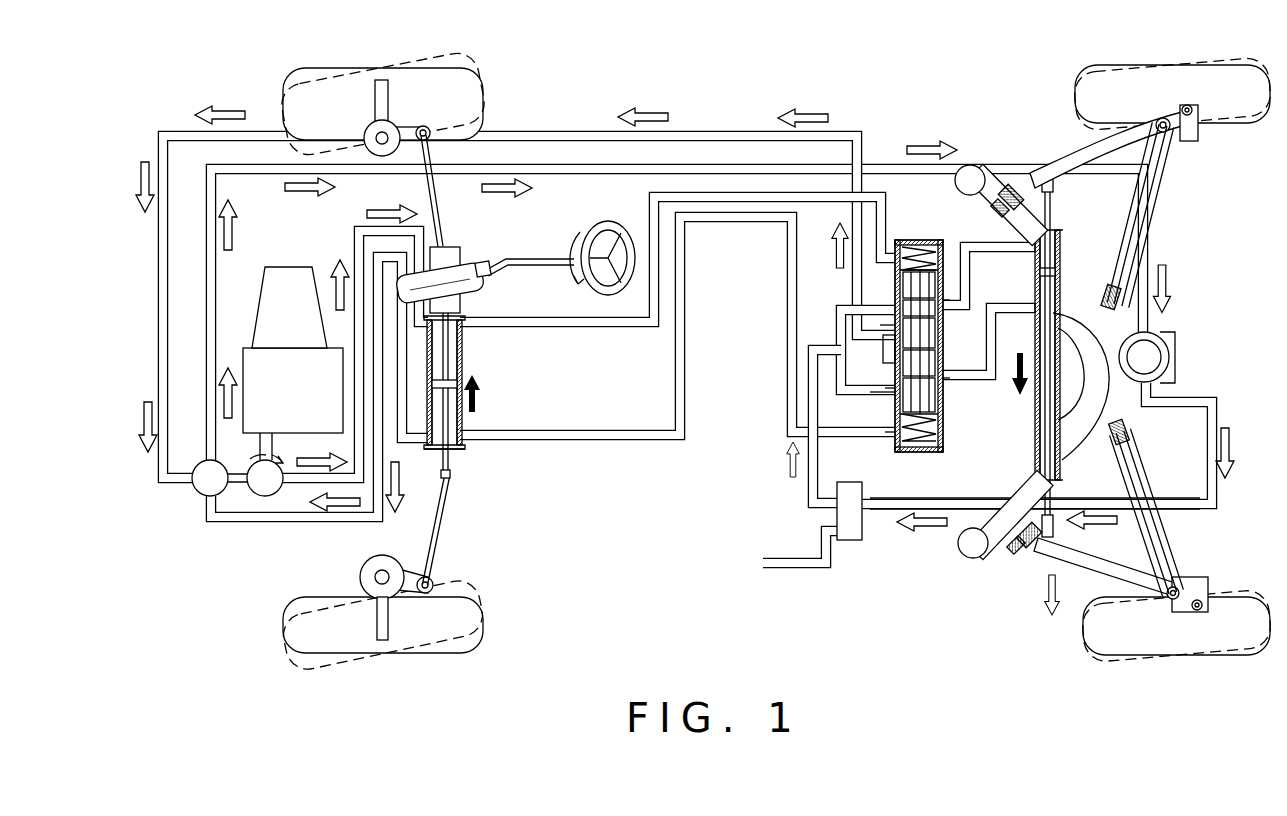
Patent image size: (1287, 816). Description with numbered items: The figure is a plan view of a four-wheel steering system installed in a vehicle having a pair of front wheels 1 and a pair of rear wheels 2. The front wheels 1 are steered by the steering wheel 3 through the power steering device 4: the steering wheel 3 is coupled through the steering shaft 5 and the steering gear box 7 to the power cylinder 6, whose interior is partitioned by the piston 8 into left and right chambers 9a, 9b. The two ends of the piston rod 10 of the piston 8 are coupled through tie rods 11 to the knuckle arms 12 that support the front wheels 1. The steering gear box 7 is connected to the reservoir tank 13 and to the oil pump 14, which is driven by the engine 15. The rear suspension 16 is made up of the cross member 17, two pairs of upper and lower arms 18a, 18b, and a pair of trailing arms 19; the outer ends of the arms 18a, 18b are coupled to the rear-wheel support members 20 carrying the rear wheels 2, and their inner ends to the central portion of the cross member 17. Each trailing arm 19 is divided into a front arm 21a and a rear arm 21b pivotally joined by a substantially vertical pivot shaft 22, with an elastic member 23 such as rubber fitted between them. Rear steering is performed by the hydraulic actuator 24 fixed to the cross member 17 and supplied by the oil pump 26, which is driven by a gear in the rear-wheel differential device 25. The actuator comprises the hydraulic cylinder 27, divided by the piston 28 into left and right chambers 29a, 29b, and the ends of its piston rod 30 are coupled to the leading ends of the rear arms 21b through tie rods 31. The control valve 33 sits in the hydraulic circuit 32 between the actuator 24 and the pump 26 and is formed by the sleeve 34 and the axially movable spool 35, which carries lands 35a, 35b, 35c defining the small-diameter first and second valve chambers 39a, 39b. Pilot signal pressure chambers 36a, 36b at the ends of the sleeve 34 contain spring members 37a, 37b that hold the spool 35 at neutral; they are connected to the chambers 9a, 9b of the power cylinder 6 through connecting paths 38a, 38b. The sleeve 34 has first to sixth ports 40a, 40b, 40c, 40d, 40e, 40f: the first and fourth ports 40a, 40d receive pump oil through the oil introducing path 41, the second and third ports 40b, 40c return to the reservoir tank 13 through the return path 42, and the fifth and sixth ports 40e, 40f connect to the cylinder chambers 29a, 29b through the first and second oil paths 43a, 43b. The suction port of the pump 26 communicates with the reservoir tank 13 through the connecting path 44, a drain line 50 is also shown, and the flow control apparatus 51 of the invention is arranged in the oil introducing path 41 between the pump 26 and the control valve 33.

The front wheels 1 is at (320, 68).
The rear wheels 2 is at (1103, 65).
The steering wheel 3 is at (608, 222).
The power steering device 4 is at (466, 446).
The steering shaft 5 is at (535, 259).
The power cylinder 6 is at (462, 370).
The steering gear box 7 is at (462, 265).
The piston 8 is at (462, 411).
The left chamber 9a is at (452, 451).
The right chamber 9b is at (461, 347).
The piston rod 10 is at (440, 473).
The tie rods 11 is at (431, 194).
The knuckle arms 12 is at (376, 84).
The reservoir tank 13 is at (197, 490).
The oil pump 14 is at (256, 497).
The engine 15 is at (248, 364).
The rear suspension 16 is at (1173, 359).
The cross member 17 is at (1086, 412).
The upper arms 18a is at (1178, 150).
The lower arms 18b is at (1166, 182).
The trailing arms 19 is at (1062, 158).
The rear-wheel support member 20 is at (1168, 108).
The front arm 21a is at (978, 165).
The rear arm 21b is at (1040, 165).
The pivot shaft 22 is at (1013, 196).
The elastic member 23 is at (1001, 200).
The hydraulic actuator 24 is at (1063, 245).
The rear-wheel differential device 25 is at (1170, 355).
The oil pump 26 is at (1178, 362).
The hydraulic cylinder 27 is at (1167, 341).
The piston 28 is at (1061, 272).
The left chamber 29a is at (1036, 322).
The right chamber 29b is at (1061, 241).
The piston rod 30 is at (1053, 480).
The tie rods 31 is at (1054, 184).
The hydraulic circuit 32 is at (890, 511).
The control valve 33 is at (870, 305).
The sleeve 34 is at (946, 442).
The spool 35 is at (878, 358).
The land 35a is at (946, 416).
The land 35b is at (938, 335).
The land 35c is at (906, 287).
The left pilot signal pressure chamber 36a is at (936, 450).
The right pilot signal pressure chamber 36b is at (912, 243).
The spring member 37a is at (906, 450).
The spring member 37b is at (892, 257).
The connecting path 38a is at (602, 441).
The connecting path 38b is at (602, 328).
The first valve chamber 39a is at (872, 394).
The second valve chamber 39b is at (882, 328).
The first port 40a is at (880, 436).
The second port 40b is at (890, 387).
The third port 40c is at (884, 341).
The fourth port 40d is at (893, 311).
The fifth port 40e is at (950, 379).
The sixth port 40f is at (952, 298).
The oil introducing path 41 is at (808, 505).
The return path 42 is at (720, 131).
The first oil path 43a is at (991, 364).
The second oil path 43b is at (990, 256).
The connecting path 44 is at (586, 164).
The drain pipe 50 is at (790, 569).
The flow control apparatus 51 is at (851, 542).